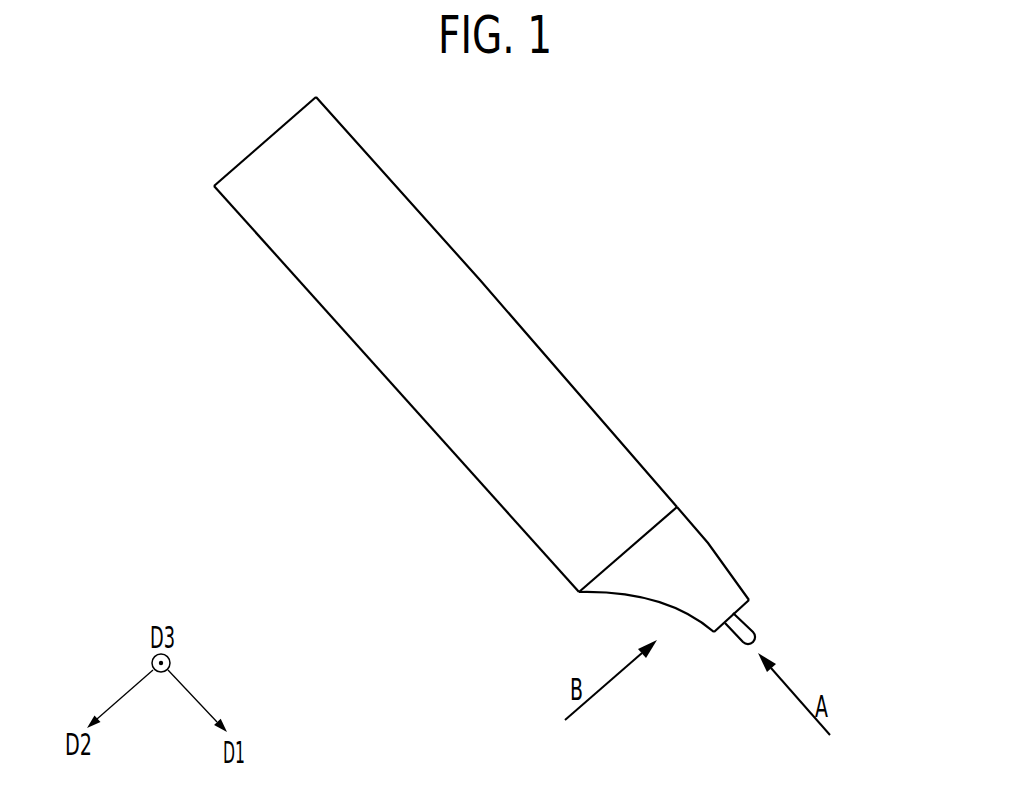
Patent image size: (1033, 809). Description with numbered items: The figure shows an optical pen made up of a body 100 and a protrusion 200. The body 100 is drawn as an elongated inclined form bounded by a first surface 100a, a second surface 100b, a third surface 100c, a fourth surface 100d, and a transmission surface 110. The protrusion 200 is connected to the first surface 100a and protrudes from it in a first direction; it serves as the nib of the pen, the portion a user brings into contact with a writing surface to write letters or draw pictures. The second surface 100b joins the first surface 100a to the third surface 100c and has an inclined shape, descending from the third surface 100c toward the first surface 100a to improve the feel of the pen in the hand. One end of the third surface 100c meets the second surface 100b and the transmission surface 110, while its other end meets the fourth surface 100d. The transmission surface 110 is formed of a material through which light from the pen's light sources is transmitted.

The body 100 is at (398, 216).
The first surface 100a is at (713, 635).
The second surface 100b is at (740, 525).
The third surface 100c is at (637, 455).
The fourth surface 100d is at (265, 140).
The transmission surface 110 is at (608, 594).
The protrusion 200 is at (748, 620).